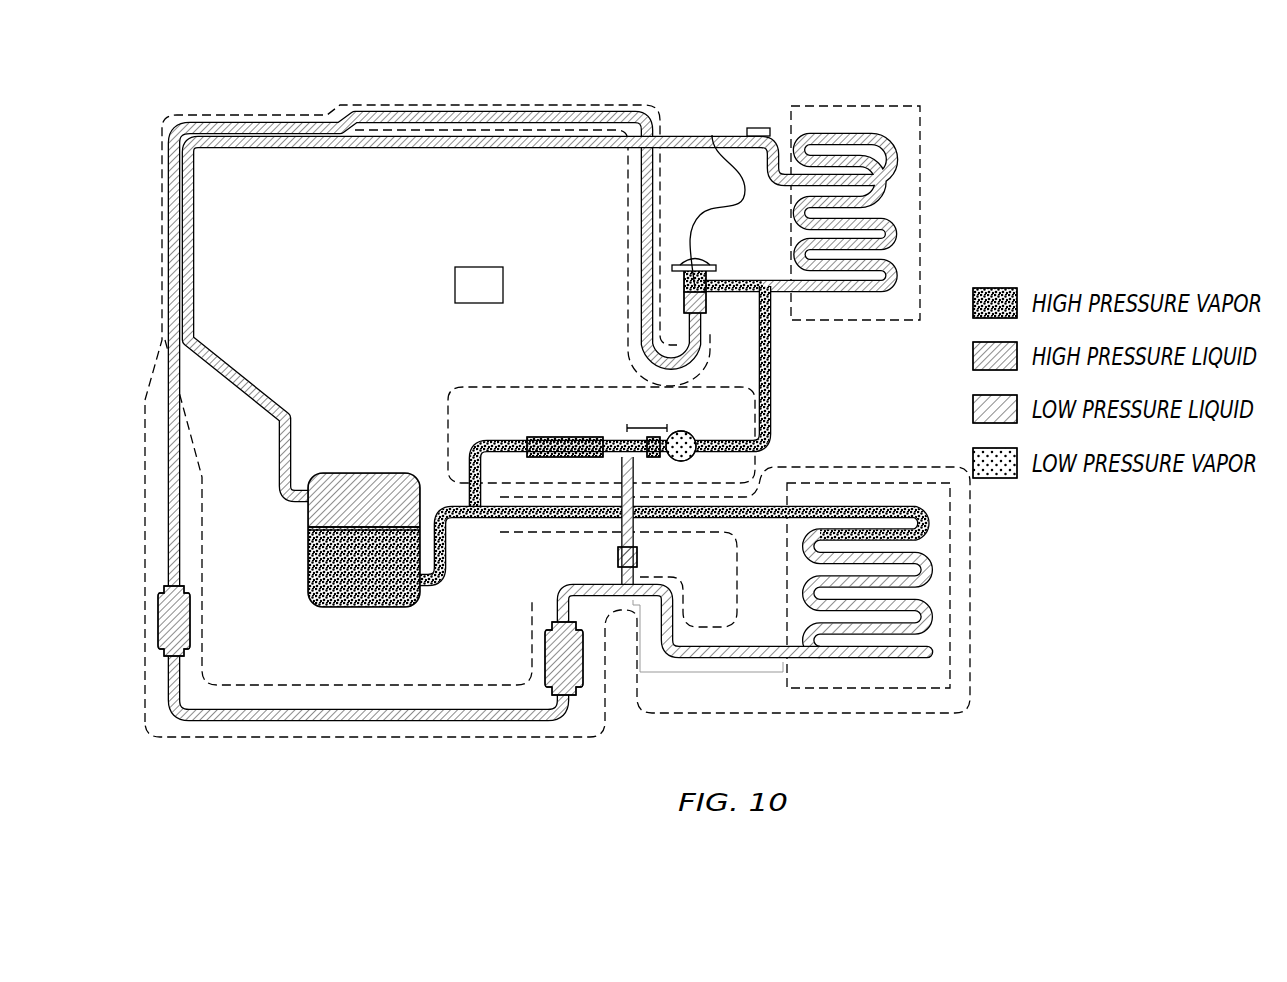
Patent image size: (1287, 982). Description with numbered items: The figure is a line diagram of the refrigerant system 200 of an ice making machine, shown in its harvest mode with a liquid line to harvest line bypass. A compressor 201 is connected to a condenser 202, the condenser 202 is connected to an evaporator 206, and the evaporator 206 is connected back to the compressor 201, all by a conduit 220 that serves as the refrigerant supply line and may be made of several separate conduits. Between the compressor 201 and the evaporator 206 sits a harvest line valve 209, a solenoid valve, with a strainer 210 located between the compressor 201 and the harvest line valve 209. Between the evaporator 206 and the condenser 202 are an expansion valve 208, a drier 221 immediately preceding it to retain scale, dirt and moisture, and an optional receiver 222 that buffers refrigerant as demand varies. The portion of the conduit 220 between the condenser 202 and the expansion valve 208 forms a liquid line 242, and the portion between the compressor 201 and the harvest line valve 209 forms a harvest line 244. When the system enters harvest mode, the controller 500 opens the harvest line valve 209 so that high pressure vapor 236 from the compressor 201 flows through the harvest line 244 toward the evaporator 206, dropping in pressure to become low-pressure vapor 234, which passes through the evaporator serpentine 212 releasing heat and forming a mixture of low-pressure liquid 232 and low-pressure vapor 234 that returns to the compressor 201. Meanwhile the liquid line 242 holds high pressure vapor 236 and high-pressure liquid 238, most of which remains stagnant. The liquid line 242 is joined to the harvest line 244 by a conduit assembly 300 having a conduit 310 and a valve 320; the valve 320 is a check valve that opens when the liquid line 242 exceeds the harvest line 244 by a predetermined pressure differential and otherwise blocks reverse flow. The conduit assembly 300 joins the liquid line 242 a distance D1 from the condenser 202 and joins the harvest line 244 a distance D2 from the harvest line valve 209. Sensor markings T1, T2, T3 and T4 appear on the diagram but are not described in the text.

The refrigerant system 200 is at (672, 95).
The compressor 201 is at (385, 493).
The condenser 202 is at (963, 680).
The evaporator 206 is at (908, 124).
The expansion valve 208 is at (700, 258).
The harvest line valve 209 is at (690, 430).
The strainer 210 is at (545, 440).
The evaporator serpentine 212 is at (822, 292).
The conduit 220 is at (408, 722).
The drier 221 is at (190, 622).
The receiver 222 is at (583, 665).
The low-pressure liquid 232 is at (920, 170).
The low-pressure vapor 234 is at (770, 405).
The high pressure vapor 236 is at (480, 440).
The high-pressure liquid 238 is at (850, 688).
The liquid line 242 is at (222, 737).
The harvest line 244 is at (448, 410).
The conduit assembly 300 is at (620, 468).
The conduit 310 is at (675, 465).
The valve 320 is at (640, 557).
The controller 500 is at (687, 430).
The temperature sensor T1 is at (700, 652).
The temperature sensor T2 is at (447, 540).
The temperature sensor T3 is at (740, 292).
The temperature sensor T4 is at (713, 133).
The distance D1 is at (757, 660).
The distance D2 is at (640, 428).